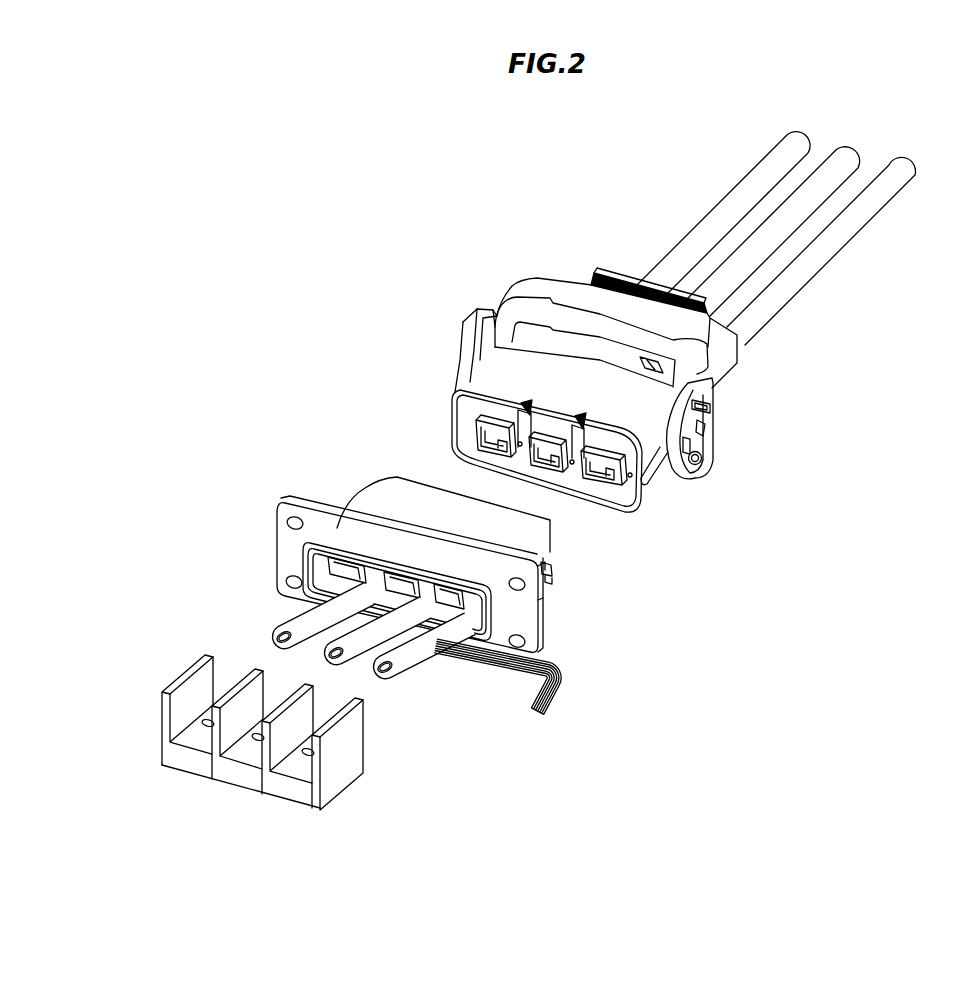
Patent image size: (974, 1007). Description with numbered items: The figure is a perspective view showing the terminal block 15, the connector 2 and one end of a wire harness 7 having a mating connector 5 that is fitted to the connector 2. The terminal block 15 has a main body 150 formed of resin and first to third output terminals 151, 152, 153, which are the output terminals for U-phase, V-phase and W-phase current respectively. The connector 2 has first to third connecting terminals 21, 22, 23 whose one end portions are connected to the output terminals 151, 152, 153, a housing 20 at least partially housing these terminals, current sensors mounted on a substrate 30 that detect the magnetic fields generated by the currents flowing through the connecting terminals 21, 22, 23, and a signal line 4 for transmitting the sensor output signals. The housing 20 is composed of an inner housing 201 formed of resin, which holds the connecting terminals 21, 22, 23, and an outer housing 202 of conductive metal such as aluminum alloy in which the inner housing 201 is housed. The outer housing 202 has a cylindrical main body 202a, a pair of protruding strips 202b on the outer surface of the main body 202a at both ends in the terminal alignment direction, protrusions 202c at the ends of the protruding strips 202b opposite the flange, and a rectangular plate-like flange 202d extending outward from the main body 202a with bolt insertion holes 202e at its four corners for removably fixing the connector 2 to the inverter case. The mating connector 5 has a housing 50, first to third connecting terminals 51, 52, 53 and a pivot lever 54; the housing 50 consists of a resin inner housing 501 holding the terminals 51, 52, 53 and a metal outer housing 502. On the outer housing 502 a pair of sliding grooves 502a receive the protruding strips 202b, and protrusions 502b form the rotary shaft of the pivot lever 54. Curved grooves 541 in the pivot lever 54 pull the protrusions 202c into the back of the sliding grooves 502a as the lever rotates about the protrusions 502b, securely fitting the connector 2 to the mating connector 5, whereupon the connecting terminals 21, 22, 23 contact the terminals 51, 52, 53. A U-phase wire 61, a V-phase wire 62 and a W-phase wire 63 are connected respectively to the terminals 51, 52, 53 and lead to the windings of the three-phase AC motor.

The connector 2 is at (252, 420).
The signal line 4 is at (572, 675).
The mating connector 5 is at (428, 264).
The wire harness 7 is at (631, 196).
The terminal block 15 is at (137, 610).
The housing 20 is at (280, 442).
The first connecting terminal 21 is at (275, 630).
The second connecting terminal 22 is at (363, 656).
The third connecting terminal 23 is at (418, 668).
The substrate 30 is at (437, 652).
The housing 50 is at (385, 302).
The first connecting terminal 51 is at (485, 442).
The second connecting terminal 52 is at (550, 460).
The third connecting terminal 53 is at (603, 479).
The pivot lever 54 is at (565, 289).
The U-phase wire 61 is at (793, 147).
The V-phase wire 62 is at (848, 158).
The W-phase wire 63 is at (900, 172).
The main body 150 is at (347, 758).
The first output terminal 151 is at (197, 735).
The second output terminal 152 is at (248, 750).
The third output terminal 153 is at (302, 765).
The inner housing 201 is at (340, 560).
The outer housing 202 is at (358, 500).
The main body 202a is at (417, 510).
The protruding strip 202b is at (552, 557).
The protrusion 202c is at (556, 573).
The flange 202d is at (547, 627).
The bolt insertion hole 202e is at (280, 533).
The inner housing 501 is at (495, 415).
The outer housing 502 is at (495, 380).
The sliding groove 502a is at (450, 423).
The protrusion 502b is at (702, 462).
The curved groove 541 is at (690, 444).